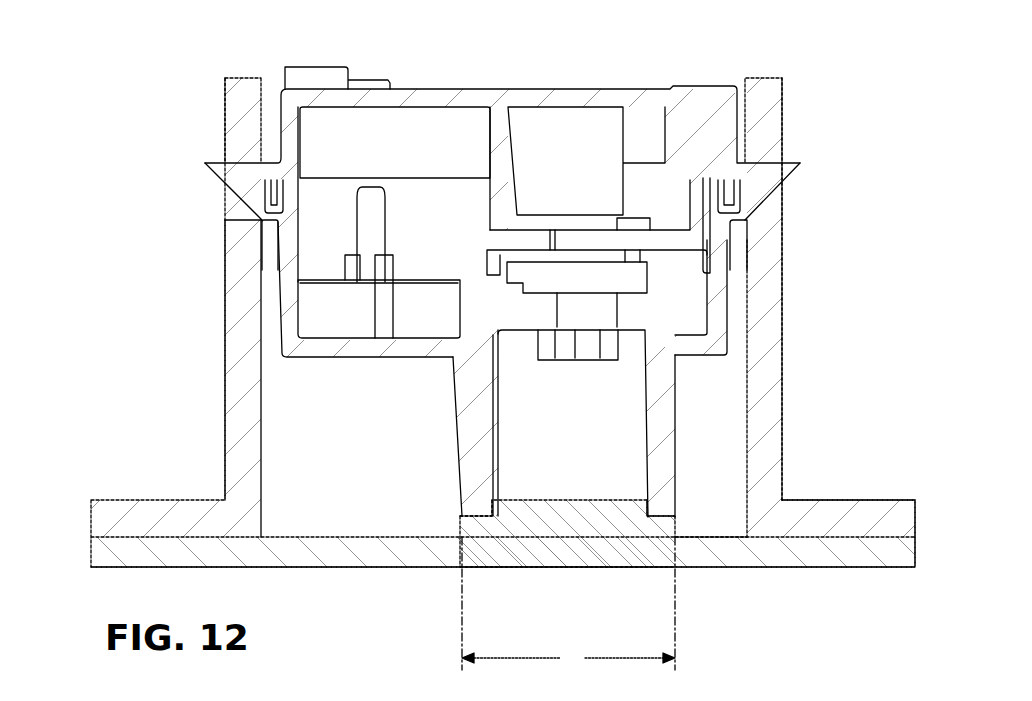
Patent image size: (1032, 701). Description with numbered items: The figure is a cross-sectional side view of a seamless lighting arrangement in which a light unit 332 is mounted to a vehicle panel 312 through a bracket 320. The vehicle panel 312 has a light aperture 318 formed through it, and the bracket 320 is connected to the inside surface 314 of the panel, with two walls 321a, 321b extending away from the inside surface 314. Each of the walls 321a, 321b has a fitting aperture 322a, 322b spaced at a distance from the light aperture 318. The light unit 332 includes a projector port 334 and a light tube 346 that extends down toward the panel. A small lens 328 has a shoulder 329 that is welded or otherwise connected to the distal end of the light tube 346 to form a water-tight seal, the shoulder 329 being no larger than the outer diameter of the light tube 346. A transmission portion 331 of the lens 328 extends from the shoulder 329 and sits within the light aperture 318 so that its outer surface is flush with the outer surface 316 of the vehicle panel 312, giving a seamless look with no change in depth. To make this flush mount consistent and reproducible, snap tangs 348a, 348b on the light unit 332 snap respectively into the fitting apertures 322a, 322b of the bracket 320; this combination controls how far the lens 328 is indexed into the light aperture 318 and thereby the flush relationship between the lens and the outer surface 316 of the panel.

The vehicle panel 312 is at (92, 555).
The inside surface 314 is at (710, 537).
The outer surface 316 is at (772, 571).
The light aperture 318 is at (631, 570).
The bracket 320 is at (812, 515).
The wall 321a is at (224, 370).
The wall 321b is at (783, 347).
The fitting aperture 322a is at (230, 221).
The fitting aperture 322b is at (786, 219).
The lens 328 is at (550, 570).
The shoulder 329 is at (468, 516).
The transmission portion 331 is at (527, 574).
The light unit 332 is at (433, 89).
The projector port 334 is at (597, 312).
The light tube 346 is at (456, 470).
The snap tang 348a is at (218, 178).
The snap tang 348b is at (798, 163).